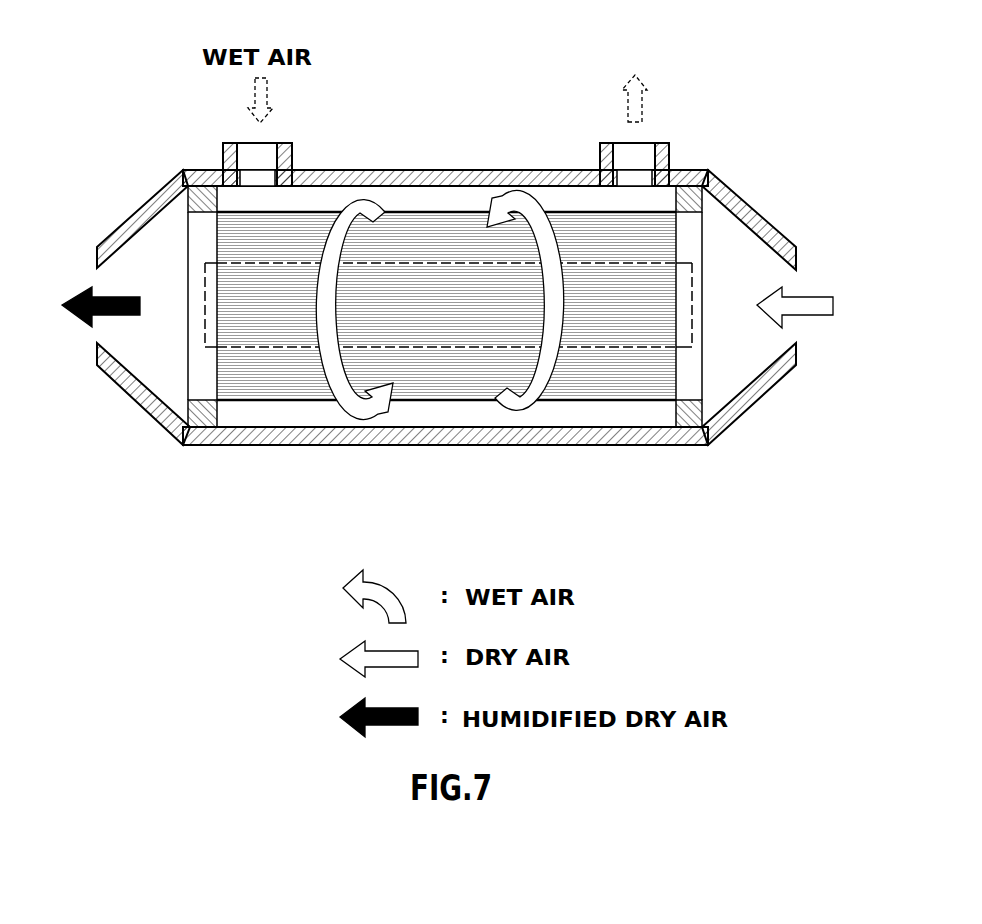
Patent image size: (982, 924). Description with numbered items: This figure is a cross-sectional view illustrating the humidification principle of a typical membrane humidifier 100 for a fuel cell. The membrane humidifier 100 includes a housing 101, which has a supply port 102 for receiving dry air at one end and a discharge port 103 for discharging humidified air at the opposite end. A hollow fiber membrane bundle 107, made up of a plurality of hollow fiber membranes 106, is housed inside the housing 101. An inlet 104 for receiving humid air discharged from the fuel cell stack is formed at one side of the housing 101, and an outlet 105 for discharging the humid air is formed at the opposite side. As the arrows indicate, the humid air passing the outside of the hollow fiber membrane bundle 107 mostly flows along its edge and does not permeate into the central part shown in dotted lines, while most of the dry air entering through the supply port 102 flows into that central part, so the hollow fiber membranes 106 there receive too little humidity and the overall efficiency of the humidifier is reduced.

The membrane humidifier 100 is at (528, 73).
The housing 101 is at (357, 443).
The supply port 102 is at (703, 247).
The discharge port 103 is at (185, 242).
The inlet 104 is at (262, 148).
The outlet 105 is at (633, 152).
The hollow fiber membrane 106 is at (303, 372).
The hollow fiber membrane bundle 107 is at (482, 402).